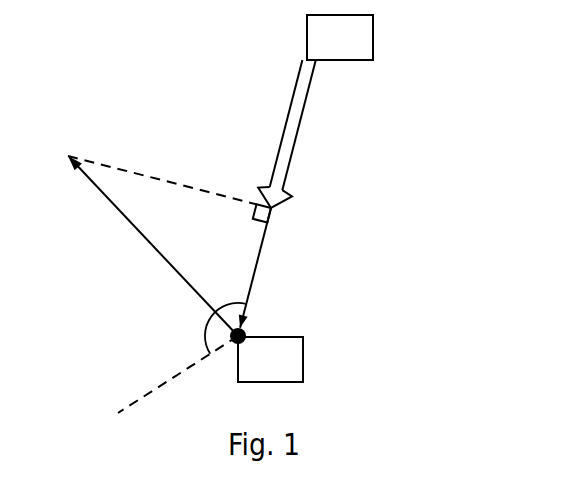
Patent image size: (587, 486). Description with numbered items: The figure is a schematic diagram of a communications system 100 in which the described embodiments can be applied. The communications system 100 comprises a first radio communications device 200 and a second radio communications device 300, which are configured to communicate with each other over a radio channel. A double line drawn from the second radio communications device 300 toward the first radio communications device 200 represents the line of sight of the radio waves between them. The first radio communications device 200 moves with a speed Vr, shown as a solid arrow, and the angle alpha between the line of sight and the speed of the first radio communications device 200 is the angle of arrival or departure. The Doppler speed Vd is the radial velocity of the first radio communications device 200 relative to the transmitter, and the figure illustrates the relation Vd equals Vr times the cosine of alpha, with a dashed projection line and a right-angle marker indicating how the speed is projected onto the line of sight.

The communications system 100 is at (458, 91).
The first radio communications device 200 is at (247, 370).
The second radio communications device 300 is at (318, 50).